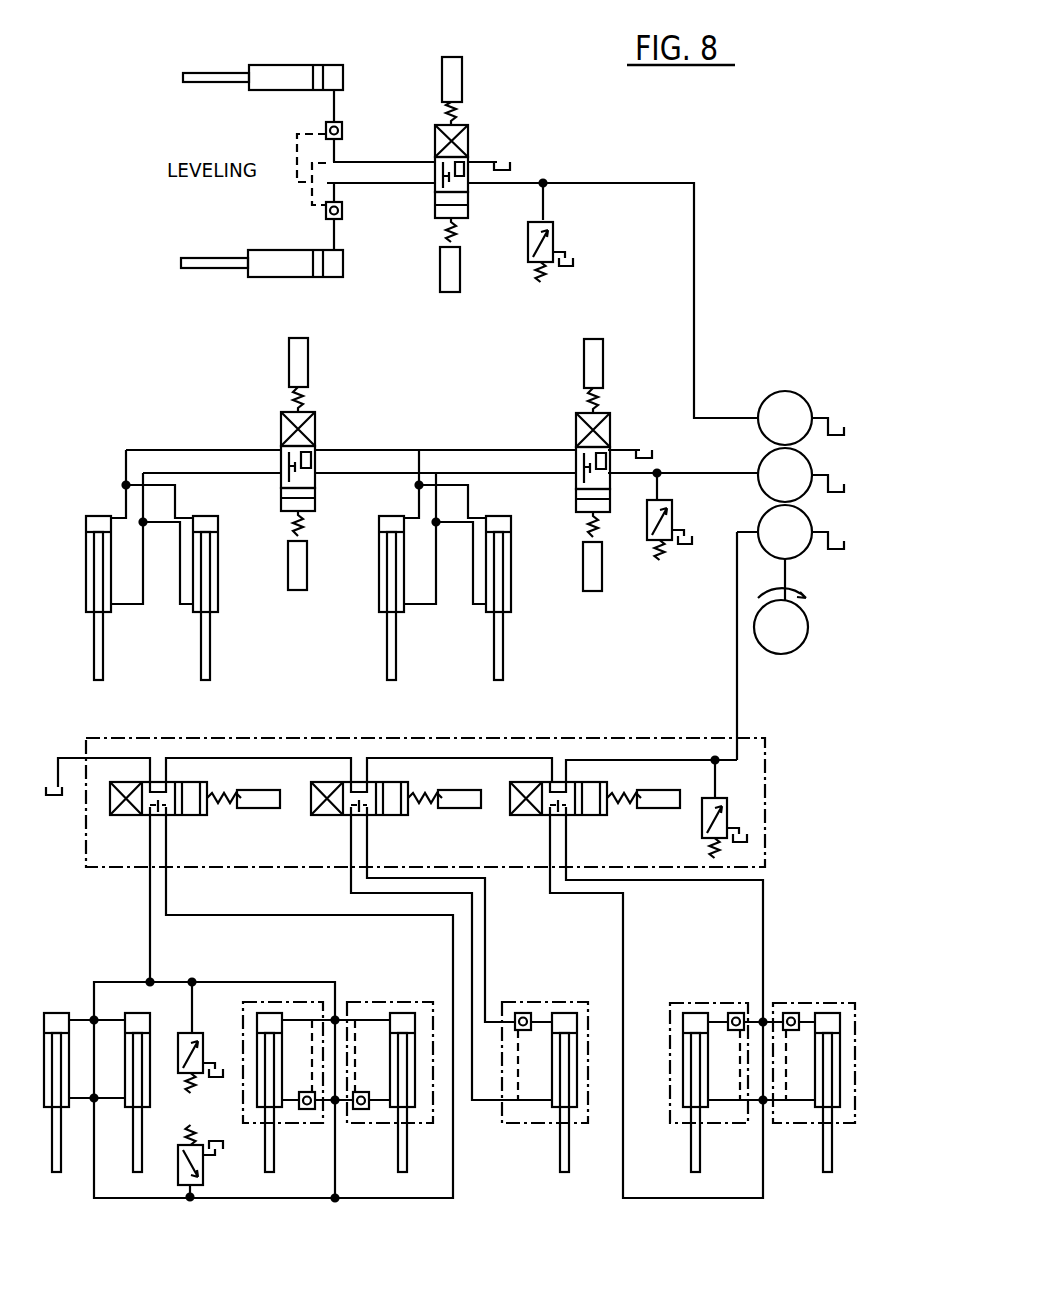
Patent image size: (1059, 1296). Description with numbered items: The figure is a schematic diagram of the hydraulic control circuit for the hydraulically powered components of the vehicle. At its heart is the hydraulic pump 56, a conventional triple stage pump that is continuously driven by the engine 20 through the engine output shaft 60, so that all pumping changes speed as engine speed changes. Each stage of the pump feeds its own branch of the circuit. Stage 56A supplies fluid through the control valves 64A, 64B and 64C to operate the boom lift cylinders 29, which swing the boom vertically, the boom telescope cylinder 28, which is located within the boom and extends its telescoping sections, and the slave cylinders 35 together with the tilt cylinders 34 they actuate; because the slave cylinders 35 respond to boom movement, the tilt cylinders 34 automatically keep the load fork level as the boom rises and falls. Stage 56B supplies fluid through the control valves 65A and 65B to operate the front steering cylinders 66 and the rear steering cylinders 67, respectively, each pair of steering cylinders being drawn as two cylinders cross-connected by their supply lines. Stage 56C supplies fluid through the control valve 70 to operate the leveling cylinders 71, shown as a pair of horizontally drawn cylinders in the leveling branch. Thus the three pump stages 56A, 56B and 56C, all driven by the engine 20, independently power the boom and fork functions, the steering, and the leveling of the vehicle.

The leveling cylinders 71 is at (272, 92).
The control valve 70 is at (468, 145).
The control valve 65B is at (281, 420).
The control valve 65A is at (576, 420).
The hydraulic pump 56 is at (798, 457).
The pump stage 56C is at (803, 428).
The pump stage 56B is at (803, 485).
The pump stage 56A is at (803, 542).
The output shaft 60 is at (787, 578).
The engine 20 is at (808, 626).
The rear steering cylinders 67 is at (192, 612).
The front steering cylinders 66 is at (486, 612).
The control valve 64C is at (178, 817).
The control valve 64B is at (380, 817).
The control valve 64A is at (540, 817).
The hydraulic tilt cylinders 34 is at (124, 1066).
The slave cylinders 35 is at (257, 1025).
The hydraulic cylinder 28 is at (568, 1013).
The hydraulic lift cylinders 29 is at (692, 1013).